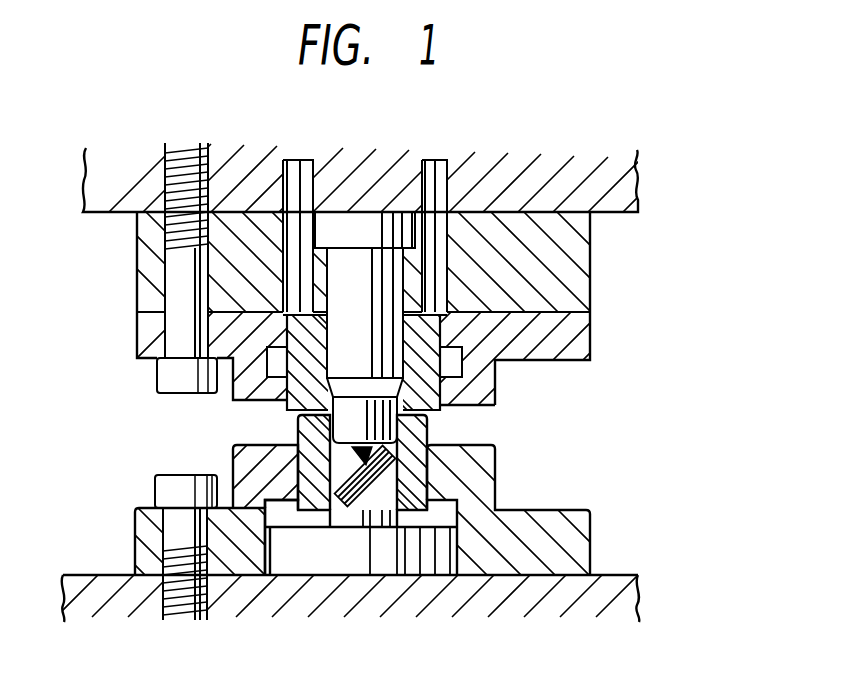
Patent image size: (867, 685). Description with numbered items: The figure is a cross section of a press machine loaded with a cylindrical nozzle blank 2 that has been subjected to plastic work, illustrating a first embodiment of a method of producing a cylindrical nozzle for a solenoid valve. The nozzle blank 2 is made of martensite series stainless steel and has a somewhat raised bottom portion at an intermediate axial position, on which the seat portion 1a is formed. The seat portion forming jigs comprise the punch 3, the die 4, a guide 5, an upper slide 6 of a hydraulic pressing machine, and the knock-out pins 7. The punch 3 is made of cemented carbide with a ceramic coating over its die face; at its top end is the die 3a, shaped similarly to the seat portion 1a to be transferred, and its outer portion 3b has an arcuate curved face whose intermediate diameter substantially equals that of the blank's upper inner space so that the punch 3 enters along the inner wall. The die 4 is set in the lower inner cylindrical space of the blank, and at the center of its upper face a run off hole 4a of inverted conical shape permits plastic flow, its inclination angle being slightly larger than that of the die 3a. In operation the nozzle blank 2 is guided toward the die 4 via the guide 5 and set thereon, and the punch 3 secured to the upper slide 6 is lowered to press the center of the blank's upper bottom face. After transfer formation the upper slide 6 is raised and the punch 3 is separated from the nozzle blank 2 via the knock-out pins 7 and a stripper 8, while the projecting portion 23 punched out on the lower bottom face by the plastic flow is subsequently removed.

The seat portion 1a is at (290, 470).
The nozzle blank 2 is at (349, 342).
The punch 3 is at (409, 327).
The die of the punch 3a is at (372, 450).
The outer portion of the punch 3b is at (343, 432).
The die 4 is at (350, 518).
The run off hole 4a is at (375, 510).
The guide 5 is at (578, 548).
The upper slide 6 is at (625, 199).
The knock-out pins 7 is at (440, 160).
The stripper 8 is at (430, 383).
The projecting portion 23 is at (385, 470).